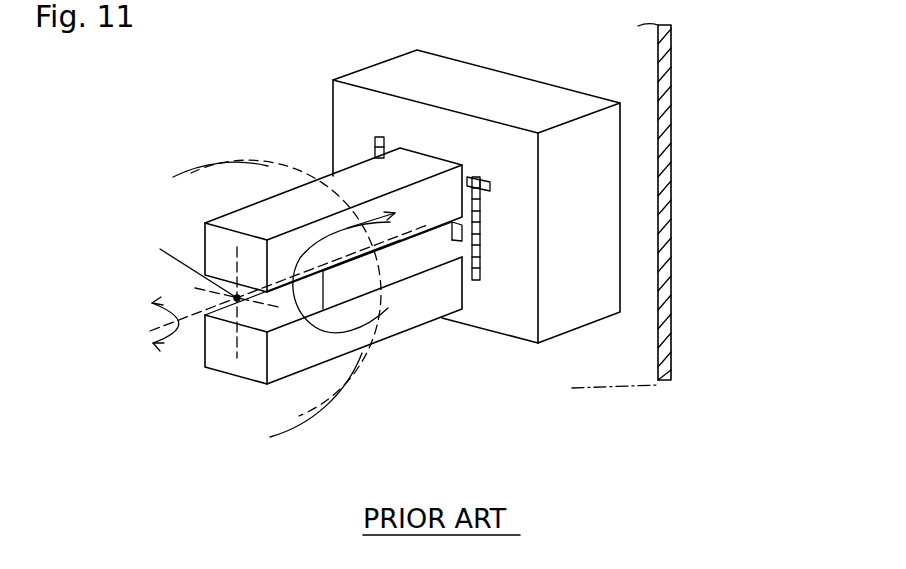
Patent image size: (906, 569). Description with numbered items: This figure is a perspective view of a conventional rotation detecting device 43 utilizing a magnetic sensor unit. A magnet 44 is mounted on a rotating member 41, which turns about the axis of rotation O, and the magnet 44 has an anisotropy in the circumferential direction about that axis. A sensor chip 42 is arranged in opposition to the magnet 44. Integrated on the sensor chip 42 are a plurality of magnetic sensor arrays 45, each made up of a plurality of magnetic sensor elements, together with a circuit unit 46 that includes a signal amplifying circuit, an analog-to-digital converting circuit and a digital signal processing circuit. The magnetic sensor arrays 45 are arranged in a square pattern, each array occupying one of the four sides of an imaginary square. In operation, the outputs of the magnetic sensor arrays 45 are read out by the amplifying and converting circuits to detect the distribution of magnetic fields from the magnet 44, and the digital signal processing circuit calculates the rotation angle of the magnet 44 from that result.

The rotating member 41 is at (327, 405).
The sensor chip 42 is at (598, 182).
The rotation detecting device 43 is at (370, 310).
The magnet 44 is at (404, 336).
The magnetic sensor arrays 45 is at (488, 240).
The circuit unit 46 is at (443, 240).